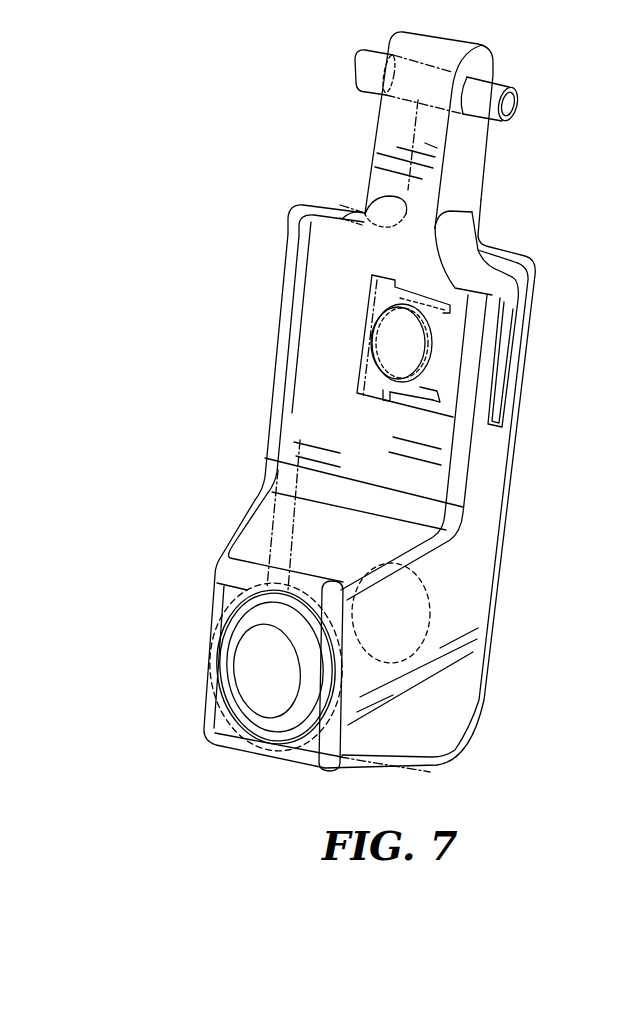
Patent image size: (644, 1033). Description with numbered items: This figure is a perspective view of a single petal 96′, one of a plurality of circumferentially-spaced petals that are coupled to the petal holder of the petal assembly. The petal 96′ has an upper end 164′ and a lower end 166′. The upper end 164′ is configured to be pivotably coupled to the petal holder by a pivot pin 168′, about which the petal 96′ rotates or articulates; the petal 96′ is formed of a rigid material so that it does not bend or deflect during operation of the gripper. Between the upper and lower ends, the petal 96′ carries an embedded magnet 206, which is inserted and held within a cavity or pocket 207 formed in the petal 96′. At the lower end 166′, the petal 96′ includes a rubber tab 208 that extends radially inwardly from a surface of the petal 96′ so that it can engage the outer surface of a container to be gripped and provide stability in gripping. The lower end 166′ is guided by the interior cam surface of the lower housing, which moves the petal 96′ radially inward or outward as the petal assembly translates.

The petal 96′ is at (485, 514).
The upper end 164′ is at (332, 113).
The lower end 166′ is at (489, 747).
The pivot pin 168′ is at (500, 96).
The magnet 206 is at (403, 336).
The cavity or pocket 207 is at (500, 386).
The rubber tab 208 is at (258, 668).